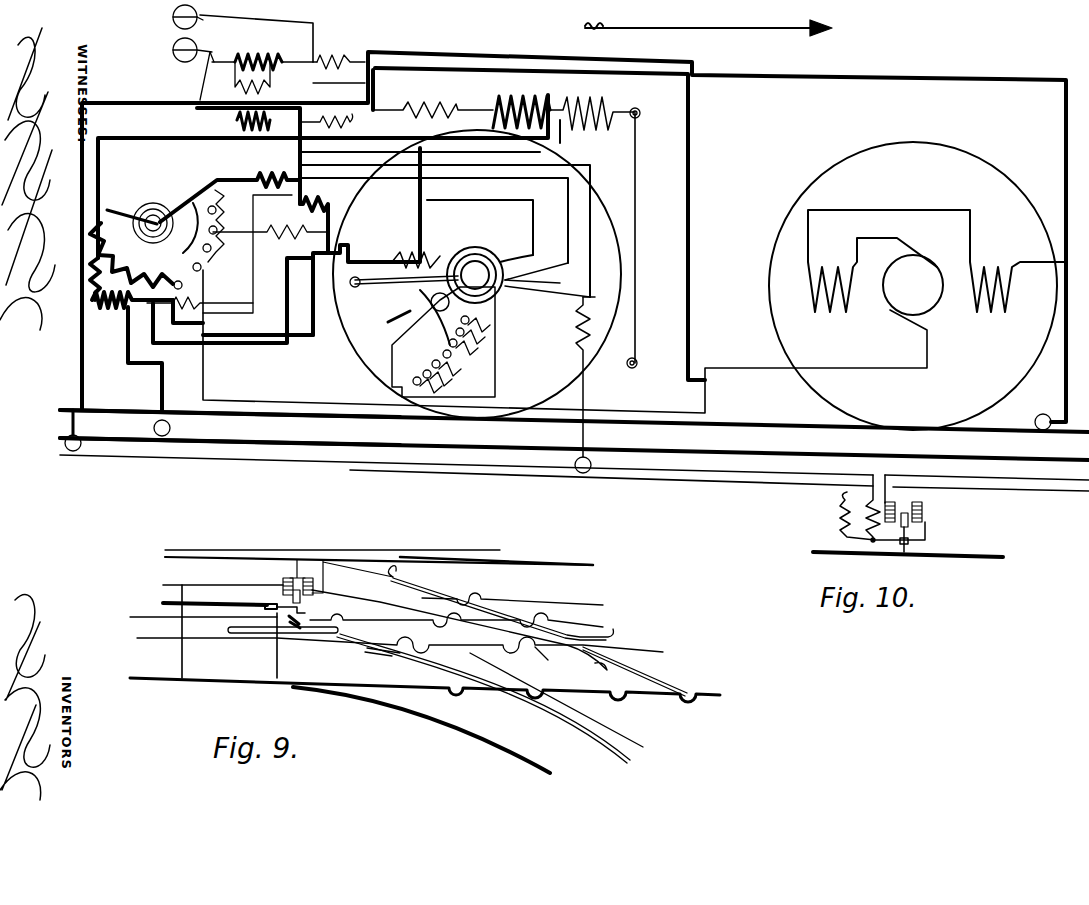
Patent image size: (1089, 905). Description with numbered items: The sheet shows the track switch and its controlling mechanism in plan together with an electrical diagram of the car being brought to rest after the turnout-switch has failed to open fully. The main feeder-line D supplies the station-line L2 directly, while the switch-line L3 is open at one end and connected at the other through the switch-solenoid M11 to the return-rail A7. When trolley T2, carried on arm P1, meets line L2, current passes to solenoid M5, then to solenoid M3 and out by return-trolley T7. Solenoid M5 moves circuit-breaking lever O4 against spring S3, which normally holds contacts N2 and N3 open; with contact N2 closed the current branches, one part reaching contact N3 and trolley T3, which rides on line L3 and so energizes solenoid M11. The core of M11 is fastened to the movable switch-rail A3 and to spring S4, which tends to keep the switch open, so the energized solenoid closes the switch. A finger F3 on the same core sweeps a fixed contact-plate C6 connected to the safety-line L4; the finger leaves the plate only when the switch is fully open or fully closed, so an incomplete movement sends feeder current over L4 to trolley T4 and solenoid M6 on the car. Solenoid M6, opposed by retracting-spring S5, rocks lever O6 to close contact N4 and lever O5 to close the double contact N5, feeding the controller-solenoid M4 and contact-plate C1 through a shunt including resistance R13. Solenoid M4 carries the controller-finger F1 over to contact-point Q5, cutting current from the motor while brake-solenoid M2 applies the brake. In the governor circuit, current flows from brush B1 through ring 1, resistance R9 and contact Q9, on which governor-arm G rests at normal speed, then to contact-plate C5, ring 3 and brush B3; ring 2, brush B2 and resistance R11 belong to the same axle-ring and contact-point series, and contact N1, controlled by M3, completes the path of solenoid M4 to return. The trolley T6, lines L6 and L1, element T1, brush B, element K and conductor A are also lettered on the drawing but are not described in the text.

In FIG. 10, the trolley T2 is at (168, 17).
In FIG. 10, the trolley T3 is at (177, 50).
In FIG. 10, the contact N3 is at (209, 39).
In FIG. 10, the arm P1 is at (256, 32).
In FIG. 10, the solenoid M5 is at (262, 51).
In FIG. 10, the spring S3 is at (300, 75).
In FIG. 10, the contact N2 is at (339, 88).
In FIG. 10, the circuit-breaking lever O4 is at (192, 76).
In FIG. 10, the circuit-breaker solenoid M3 is at (248, 156).
In FIG. 10, the contact N1 is at (326, 130).
In FIG. 10, the resistance R11 is at (270, 176).
In FIG. 10, the resistance R13 is at (82, 272).
In FIG. 10, the contact-point Q5 is at (219, 227).
In FIG. 10, the controller-finger F1 is at (140, 213).
In FIG. 10, the contact-plate C1 is at (190, 228).
In FIG. 10, the controller-solenoid M4 is at (131, 255).
In FIG. 10, the solenoid M6 is at (132, 309).
In FIG. 10, the circuit-closing lever O6 is at (144, 358).
In FIG. 10, the contact N4 is at (229, 311).
In FIG. 10, the circuit-closing lever O5 is at (318, 60).
In FIG. 10, the retracting-spring S5 is at (200, 299).
In FIG. 10, the double contact N5 is at (188, 315).
In FIG. 10, the terminal T6 is at (82, 430).
In FIG. 10, the trolley T4 is at (172, 428).
In FIG. 10, the line conductor L6 is at (230, 445).
In FIG. 10, the safety-line L4 is at (230, 426).
In FIG. 9, the safety-line L4 is at (199, 608).
In FIG. 10, the line conductor L1 is at (574, 478).
In FIG. 10, the terminal T1 is at (592, 400).
In FIG. 10, the brake-solenoid M2 is at (504, 100).
In FIG. 10, the ring 1 is at (475, 275).
In FIG. 10, the brush B3 is at (516, 250).
In FIG. 10, the brush B2 is at (536, 266).
In FIG. 10, the brush B is at (547, 290).
In FIG. 10, the brush B1 is at (577, 307).
In FIG. 10, the ring 3 is at (532, 287).
In FIG. 10, the governor-arm G is at (436, 308).
In FIG. 10, the contact-plate C5 is at (435, 319).
In FIG. 10, the resistance R9 is at (486, 360).
In FIG. 10, the contact-point Q9 is at (439, 378).
In FIG. 10, the motor armature K is at (937, 272).
In FIG. 10, the return-trolley T7 is at (1037, 414).
In FIG. 10, the conductor A is at (1067, 430).
In FIG. 9, the switch-line L3 is at (379, 563).
In FIG. 9, the station-line L2 is at (209, 586).
In FIG. 9, the switch-solenoid M11 is at (285, 582).
In FIG. 9, the finger F3 is at (264, 597).
In FIG. 9, the spring S4 is at (303, 604).
In FIG. 9, the ring 2 is at (294, 626).
In FIG. 9, the contact-plate C6 is at (283, 625).
In FIG. 9, the switch-rail A3 is at (481, 603).
In FIG. 9, the return-rail A7 is at (496, 570).
In FIG. 9, the main feeder-line D is at (425, 725).